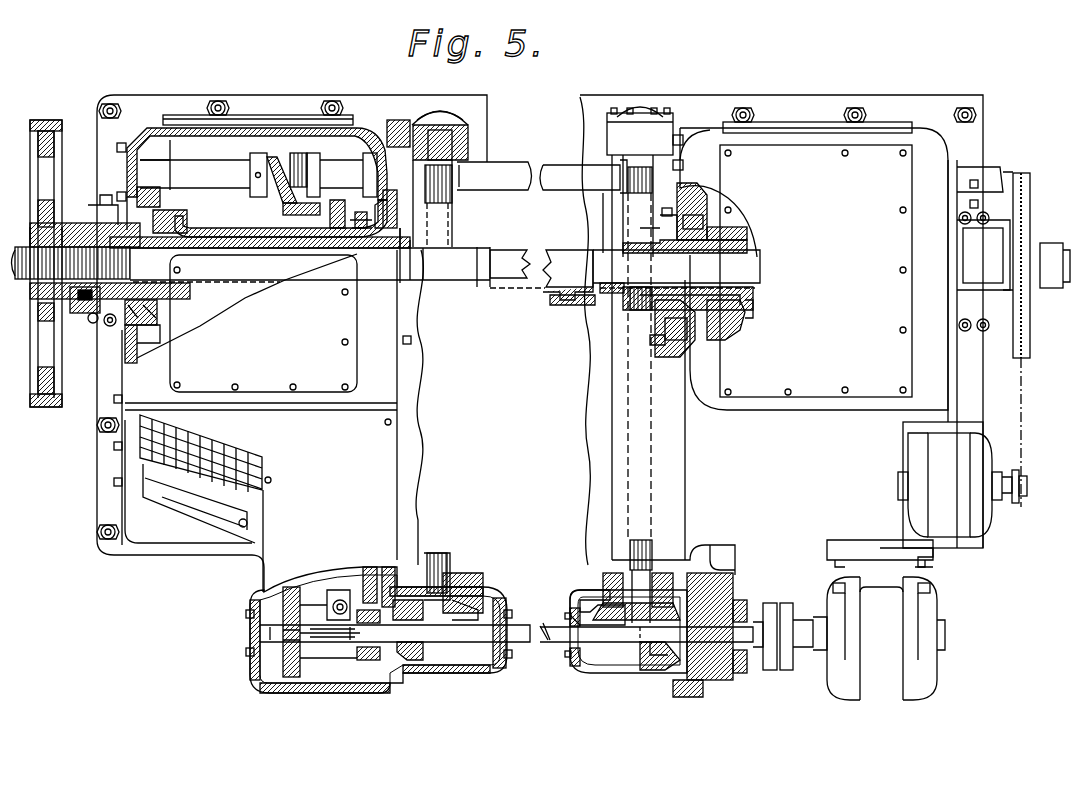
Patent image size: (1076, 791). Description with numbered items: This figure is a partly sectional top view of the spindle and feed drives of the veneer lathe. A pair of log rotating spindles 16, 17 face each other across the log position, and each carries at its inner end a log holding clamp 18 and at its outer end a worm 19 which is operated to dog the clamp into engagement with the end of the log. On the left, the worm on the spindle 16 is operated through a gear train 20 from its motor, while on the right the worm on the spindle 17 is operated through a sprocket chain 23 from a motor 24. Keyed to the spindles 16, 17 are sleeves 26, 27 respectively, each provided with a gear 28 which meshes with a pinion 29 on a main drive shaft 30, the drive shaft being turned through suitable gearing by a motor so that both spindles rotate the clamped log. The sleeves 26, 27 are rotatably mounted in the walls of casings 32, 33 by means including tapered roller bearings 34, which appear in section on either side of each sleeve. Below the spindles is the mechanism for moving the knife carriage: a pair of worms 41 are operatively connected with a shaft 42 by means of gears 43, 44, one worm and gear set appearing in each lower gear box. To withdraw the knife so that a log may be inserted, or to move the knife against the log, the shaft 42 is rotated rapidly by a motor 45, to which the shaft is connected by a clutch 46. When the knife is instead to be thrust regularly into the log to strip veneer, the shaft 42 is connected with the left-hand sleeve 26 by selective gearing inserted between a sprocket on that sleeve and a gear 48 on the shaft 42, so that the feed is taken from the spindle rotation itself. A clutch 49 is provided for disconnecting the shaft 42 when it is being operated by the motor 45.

The log rotating spindle 16 is at (445, 257).
The log rotating spindle 17 is at (676, 280).
The log holding clamp 18 is at (500, 262).
The worm 19 is at (24, 252).
The gear train 20 is at (40, 124).
The sprocket chain 23 is at (1024, 440).
The motor 24 is at (977, 517).
The sleeve 26 is at (213, 228).
The sleeve 27 is at (742, 318).
The gear 28 is at (287, 190).
The pinion 29 is at (293, 160).
The main drive shaft 30 is at (217, 167).
The casing 32 is at (147, 130).
The casing 33 is at (712, 140).
The tapered roller bearings 34 is at (153, 312).
The worm 41 is at (447, 190).
The shaft 42 is at (525, 630).
The gear 43 is at (478, 605).
The gear 44 is at (410, 655).
The motor 45 is at (886, 620).
The clutch 46 is at (785, 668).
The gear 48 is at (298, 687).
The clutch 49 is at (345, 660).